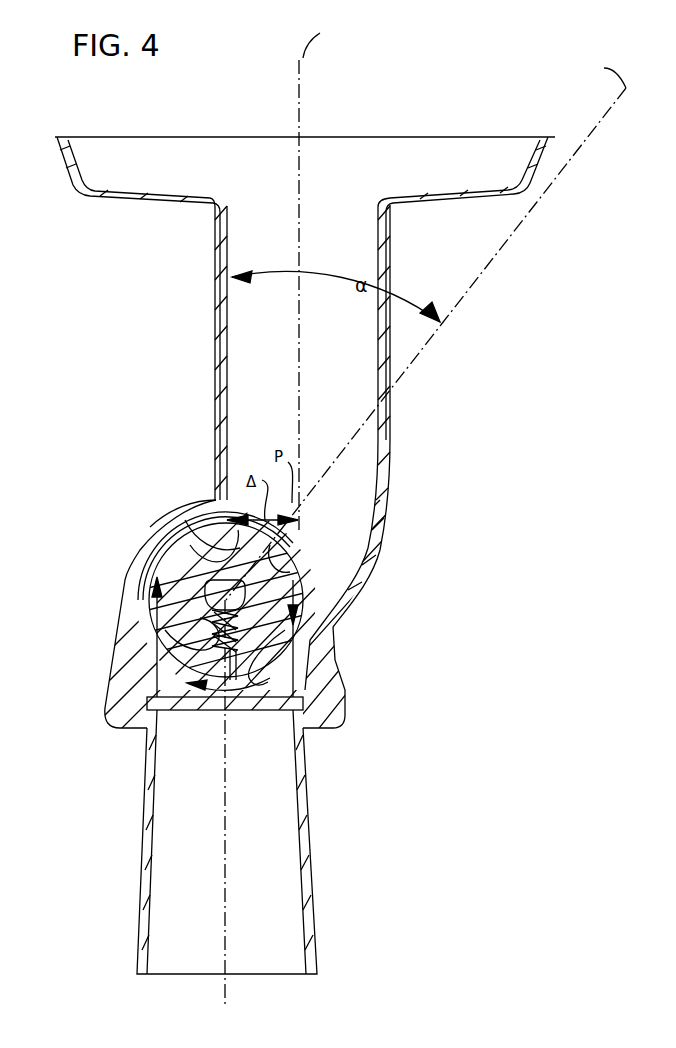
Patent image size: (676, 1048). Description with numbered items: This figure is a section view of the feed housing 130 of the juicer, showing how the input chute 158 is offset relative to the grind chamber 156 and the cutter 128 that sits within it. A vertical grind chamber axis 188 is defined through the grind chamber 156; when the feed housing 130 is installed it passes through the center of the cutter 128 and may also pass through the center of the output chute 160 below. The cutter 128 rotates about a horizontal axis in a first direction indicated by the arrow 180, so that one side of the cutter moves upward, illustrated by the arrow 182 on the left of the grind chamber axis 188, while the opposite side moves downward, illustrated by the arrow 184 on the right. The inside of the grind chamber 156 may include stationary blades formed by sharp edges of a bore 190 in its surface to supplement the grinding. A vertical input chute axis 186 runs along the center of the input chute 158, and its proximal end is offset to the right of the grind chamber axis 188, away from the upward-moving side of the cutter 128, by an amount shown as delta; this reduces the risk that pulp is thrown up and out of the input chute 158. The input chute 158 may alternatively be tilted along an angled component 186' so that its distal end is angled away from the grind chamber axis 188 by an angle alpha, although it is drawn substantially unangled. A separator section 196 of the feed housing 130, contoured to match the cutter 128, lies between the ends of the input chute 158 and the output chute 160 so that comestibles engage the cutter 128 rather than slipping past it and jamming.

The feed housing 130 is at (115, 440).
The cutter 128 is at (178, 520).
The grind chamber 156 is at (150, 668).
The input chute 158 is at (216, 283).
The output chute 160 is at (143, 833).
The arrow 180 is at (240, 697).
The arrow 182 is at (150, 630).
The arrow 184 is at (305, 560).
The input chute axis 186 is at (253, 276).
The angled component 186' is at (426, 329).
The grind chamber axis 188 is at (225, 860).
The bore 190 is at (140, 575).
The separator section 196 is at (335, 655).